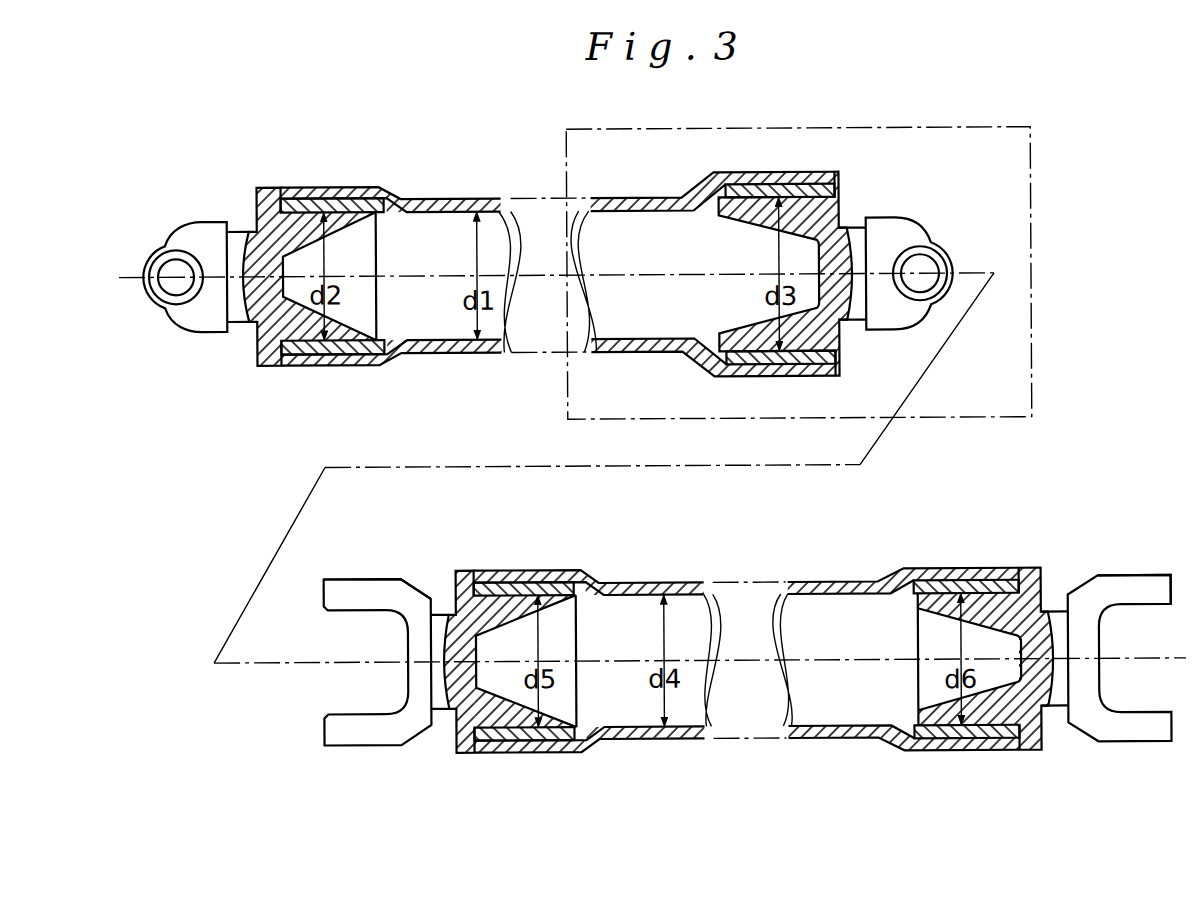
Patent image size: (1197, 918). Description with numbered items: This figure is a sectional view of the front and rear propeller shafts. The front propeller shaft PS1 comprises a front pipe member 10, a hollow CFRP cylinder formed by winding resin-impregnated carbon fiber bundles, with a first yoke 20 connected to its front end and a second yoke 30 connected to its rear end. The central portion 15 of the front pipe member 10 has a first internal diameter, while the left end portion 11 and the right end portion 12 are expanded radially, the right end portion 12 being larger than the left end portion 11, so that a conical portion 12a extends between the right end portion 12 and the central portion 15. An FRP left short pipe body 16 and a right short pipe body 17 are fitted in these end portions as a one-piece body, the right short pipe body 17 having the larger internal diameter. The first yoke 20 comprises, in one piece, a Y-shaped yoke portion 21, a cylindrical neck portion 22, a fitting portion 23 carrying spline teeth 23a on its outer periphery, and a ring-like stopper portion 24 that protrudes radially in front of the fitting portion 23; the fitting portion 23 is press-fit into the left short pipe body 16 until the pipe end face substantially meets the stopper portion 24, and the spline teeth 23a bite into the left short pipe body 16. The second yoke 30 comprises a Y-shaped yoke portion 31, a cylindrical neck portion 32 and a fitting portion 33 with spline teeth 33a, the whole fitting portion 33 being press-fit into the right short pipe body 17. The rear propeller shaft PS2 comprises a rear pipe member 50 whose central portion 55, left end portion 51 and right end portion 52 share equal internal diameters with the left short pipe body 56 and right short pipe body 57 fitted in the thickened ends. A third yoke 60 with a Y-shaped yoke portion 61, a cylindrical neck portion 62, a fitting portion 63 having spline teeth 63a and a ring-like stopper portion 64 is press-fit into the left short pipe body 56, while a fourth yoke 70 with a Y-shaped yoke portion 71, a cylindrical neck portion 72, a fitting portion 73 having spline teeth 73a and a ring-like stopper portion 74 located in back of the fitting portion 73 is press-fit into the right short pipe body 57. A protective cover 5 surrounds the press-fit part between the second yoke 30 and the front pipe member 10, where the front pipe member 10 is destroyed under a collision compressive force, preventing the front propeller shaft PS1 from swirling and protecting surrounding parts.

The protective cover 5 is at (928, 130).
The front propeller shaft PS1 is at (432, 136).
The rear propeller shaft PS2 is at (830, 784).
The front pipe member 10 is at (568, 286).
The left end portion 11 is at (340, 191).
The right end portion 12 is at (807, 179).
The conical portion 12a is at (683, 196).
The central portion 15 is at (433, 201).
The left short pipe body 16 is at (302, 200).
The right short pipe body 17 is at (747, 189).
The first yoke 20 is at (172, 257).
The Y-shaped yoke portion 21 is at (167, 310).
The cylindrical neck portion 22 is at (238, 319).
The fitting portion 23 is at (360, 331).
The spline teeth 23a is at (338, 346).
The ring-like stopper portion 24 is at (272, 358).
The second yoke 30 is at (943, 254).
The Y-shaped yoke portion 31 is at (923, 247).
The cylindrical neck portion 32 is at (860, 241).
The fitting portion 33 is at (747, 328).
The spline teeth 33a is at (783, 370).
The rear pipe member 50 is at (752, 680).
The left end portion 51 is at (542, 752).
The right end portion 52 is at (975, 754).
The central portion 55 is at (802, 740).
The left short pipe body 56 is at (487, 752).
The right short pipe body 57 is at (1010, 751).
The third yoke 60 is at (362, 681).
The Y-shaped yoke portion 61 is at (338, 587).
The cylindrical neck portion 62 is at (438, 622).
The fitting portion 63 is at (563, 721).
The spline teeth 63a is at (533, 588).
The ring-like stopper portion 64 is at (457, 579).
The fourth yoke 70 is at (1126, 681).
The Y-shaped yoke portion 71 is at (1140, 588).
The cylindrical neck portion 72 is at (1050, 612).
The fitting portion 73 is at (947, 618).
The spline teeth 73a is at (953, 588).
The ring-like stopper portion 74 is at (1030, 585).